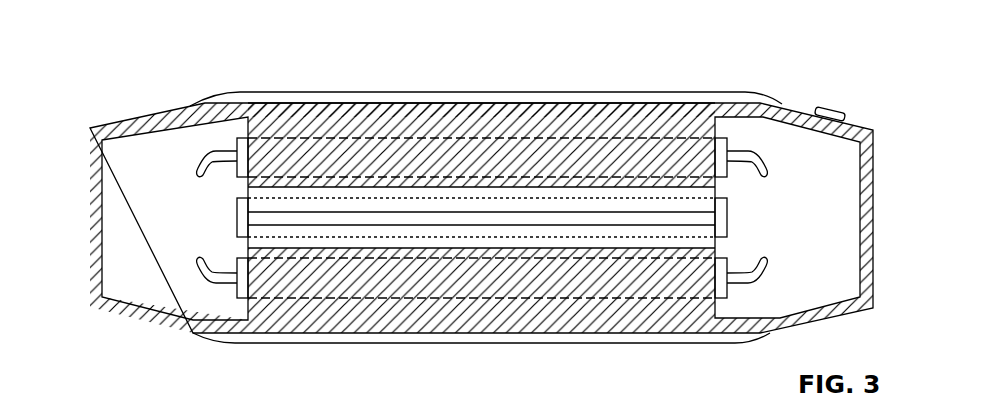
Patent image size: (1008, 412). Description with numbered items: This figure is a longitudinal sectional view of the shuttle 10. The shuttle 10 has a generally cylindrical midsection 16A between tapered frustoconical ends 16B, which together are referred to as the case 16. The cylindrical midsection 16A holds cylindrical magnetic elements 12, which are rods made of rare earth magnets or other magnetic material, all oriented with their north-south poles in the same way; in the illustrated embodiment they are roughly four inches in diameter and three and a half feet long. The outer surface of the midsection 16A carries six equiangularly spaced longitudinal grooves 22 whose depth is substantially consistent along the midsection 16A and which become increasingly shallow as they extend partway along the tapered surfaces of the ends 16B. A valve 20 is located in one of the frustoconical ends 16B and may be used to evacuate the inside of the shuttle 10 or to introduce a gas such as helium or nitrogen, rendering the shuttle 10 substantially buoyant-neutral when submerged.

The shuttle 10 is at (122, 42).
The magnetic element 12 is at (540, 152).
The case 16 is at (338, 348).
The cylindrical midsection 16A is at (460, 92).
The frustoconical end 16B is at (137, 112).
The valve 20 is at (828, 110).
The longitudinal groove 22 is at (197, 165).